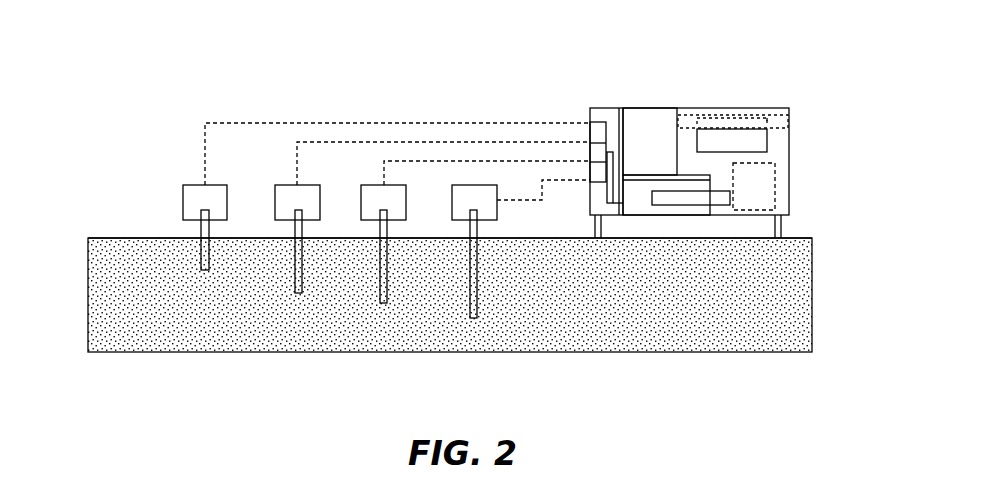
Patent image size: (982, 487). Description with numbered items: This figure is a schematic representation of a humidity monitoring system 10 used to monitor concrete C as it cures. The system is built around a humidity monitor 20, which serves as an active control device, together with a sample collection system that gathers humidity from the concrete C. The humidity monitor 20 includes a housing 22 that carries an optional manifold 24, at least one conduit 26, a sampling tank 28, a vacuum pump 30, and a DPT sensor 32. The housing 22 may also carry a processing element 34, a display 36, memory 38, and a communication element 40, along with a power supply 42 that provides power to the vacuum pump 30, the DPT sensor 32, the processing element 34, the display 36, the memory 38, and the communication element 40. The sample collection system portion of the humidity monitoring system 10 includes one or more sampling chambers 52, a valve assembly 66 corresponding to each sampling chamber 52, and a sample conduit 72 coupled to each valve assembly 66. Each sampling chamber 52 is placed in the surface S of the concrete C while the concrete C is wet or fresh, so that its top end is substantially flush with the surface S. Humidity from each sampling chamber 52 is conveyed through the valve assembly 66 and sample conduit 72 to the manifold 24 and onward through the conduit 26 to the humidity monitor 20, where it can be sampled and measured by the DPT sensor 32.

The humidity monitoring system 10 is at (117, 62).
The humidity monitor 20 is at (807, 110).
The housing 22 is at (790, 172).
The manifold 24 is at (607, 121).
The conduit 26 is at (610, 190).
The sampling tank 28 is at (633, 207).
The vacuum pump 30 is at (652, 122).
The DPT sensor 32 is at (736, 197).
The processing element 34 is at (743, 120).
The display 36 is at (773, 142).
The memory 38 is at (776, 117).
The communication element 40 is at (684, 121).
The power supply 42 is at (777, 188).
The sampling chamber 52 is at (383, 305).
The valve assembly 66 is at (270, 197).
The sample conduit 72 is at (393, 140).
The surface S is at (131, 238).
The concrete C is at (110, 293).